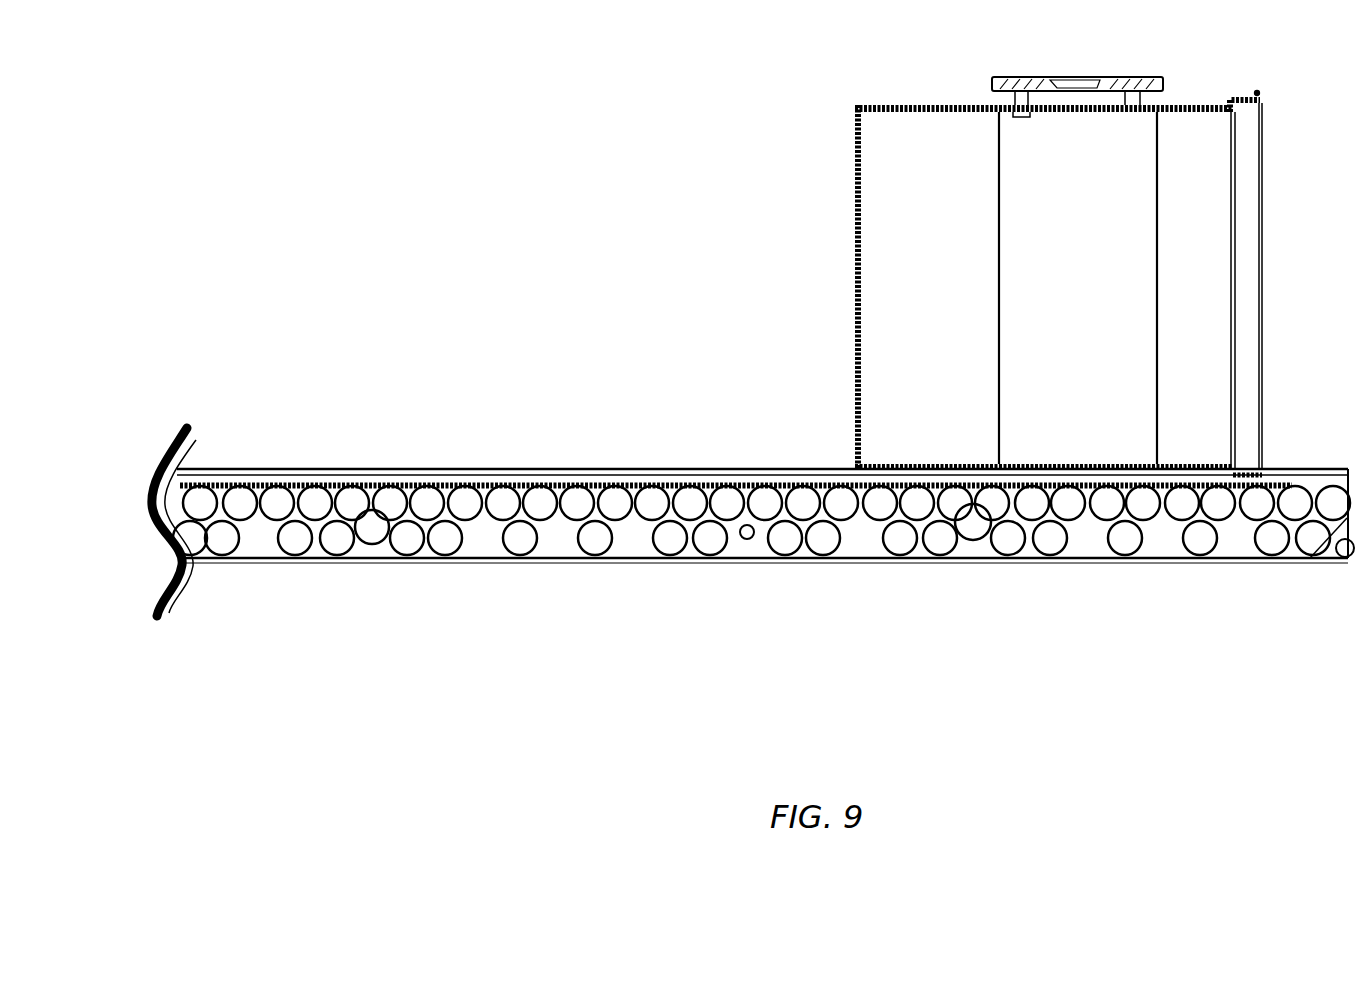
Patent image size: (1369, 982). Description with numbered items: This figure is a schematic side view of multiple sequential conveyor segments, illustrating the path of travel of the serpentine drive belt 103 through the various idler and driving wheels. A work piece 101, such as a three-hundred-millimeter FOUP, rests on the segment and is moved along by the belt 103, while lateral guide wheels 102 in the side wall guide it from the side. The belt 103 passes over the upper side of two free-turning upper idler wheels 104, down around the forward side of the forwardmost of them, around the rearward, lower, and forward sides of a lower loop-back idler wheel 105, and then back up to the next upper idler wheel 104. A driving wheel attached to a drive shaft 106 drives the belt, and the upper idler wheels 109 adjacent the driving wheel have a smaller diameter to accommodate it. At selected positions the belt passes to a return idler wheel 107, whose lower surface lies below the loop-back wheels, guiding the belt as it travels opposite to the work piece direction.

The work piece 101 is at (847, 118).
The lateral guide wheels 102 is at (820, 482).
The drive belt 103 is at (632, 487).
The upper idler wheels 104 is at (655, 503).
The lower loop-back idler wheels 105 is at (595, 538).
The drive shaft 106 is at (370, 520).
The return idler wheels 107 is at (785, 538).
The upper idler wheels adjacent the driving wheel 109 is at (387, 500).